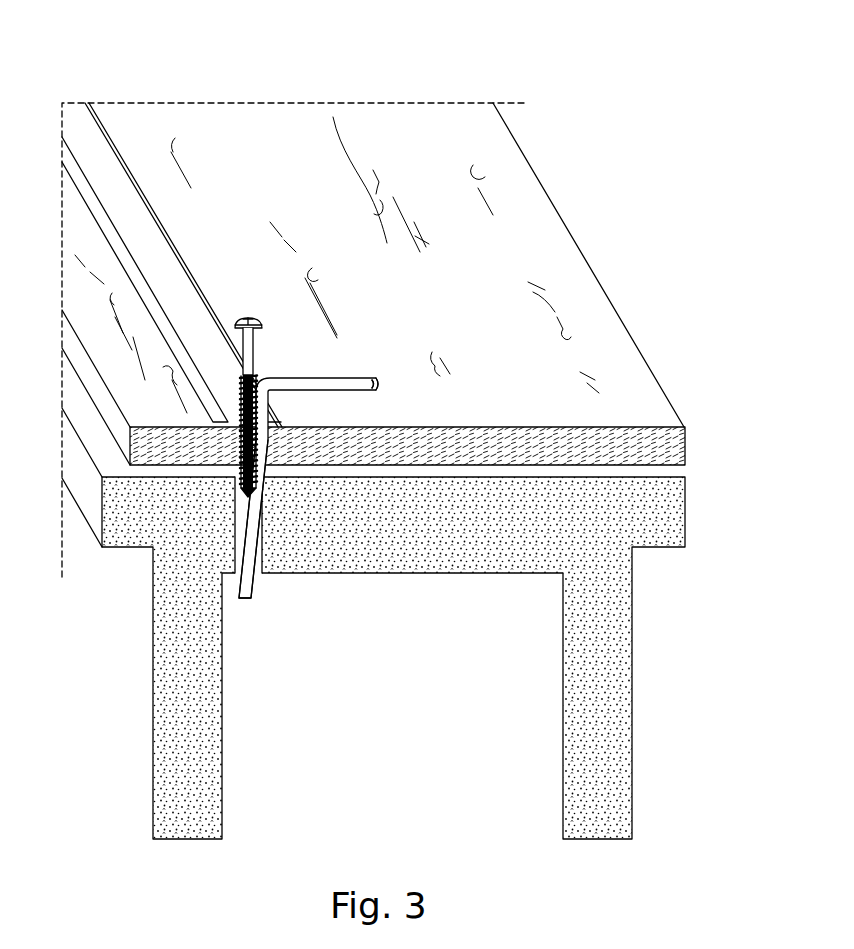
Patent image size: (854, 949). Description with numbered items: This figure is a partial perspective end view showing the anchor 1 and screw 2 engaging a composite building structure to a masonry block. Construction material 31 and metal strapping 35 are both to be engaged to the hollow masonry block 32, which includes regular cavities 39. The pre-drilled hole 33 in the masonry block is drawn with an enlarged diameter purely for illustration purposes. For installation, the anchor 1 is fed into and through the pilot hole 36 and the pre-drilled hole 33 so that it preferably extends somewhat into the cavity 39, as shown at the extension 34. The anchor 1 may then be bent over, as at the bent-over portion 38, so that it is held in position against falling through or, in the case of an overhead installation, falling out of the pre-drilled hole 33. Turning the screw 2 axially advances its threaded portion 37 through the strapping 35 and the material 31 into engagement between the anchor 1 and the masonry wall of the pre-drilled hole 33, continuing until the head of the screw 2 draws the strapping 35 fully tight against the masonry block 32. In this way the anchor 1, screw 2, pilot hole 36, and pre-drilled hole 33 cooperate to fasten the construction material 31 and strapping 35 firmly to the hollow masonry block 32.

The anchor 1 is at (365, 378).
The screw 2 is at (250, 318).
The construction material 31 is at (650, 427).
The hollow masonry block 32 is at (685, 512).
The pre-drilled hole 33 is at (265, 560).
The anchor extension into cavity 34 is at (250, 588).
The metal strapping 35 is at (75, 122).
The pilot hole 36 is at (243, 392).
The threaded portion 37 is at (242, 452).
The bent-over portion of anchor 38 is at (278, 378).
The cavities 39 is at (513, 622).